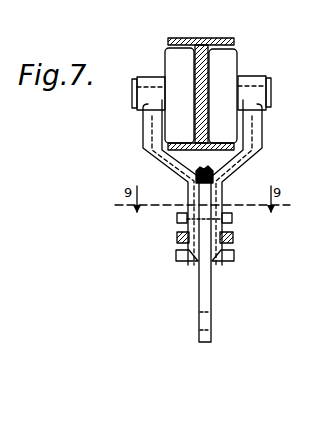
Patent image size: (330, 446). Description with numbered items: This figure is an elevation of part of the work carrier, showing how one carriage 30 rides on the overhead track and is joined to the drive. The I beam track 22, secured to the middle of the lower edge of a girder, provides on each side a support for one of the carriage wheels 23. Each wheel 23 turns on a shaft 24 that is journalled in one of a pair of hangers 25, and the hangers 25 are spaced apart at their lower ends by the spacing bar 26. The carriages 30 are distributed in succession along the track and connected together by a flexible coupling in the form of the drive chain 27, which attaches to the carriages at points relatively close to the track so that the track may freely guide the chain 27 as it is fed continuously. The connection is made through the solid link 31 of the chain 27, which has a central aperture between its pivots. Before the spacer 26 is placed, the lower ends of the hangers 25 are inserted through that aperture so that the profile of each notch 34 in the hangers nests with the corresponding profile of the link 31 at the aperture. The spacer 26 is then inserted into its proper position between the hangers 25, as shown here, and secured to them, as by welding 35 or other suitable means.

The I beam track 22 is at (188, 38).
The carriage wheel 23 is at (170, 63).
The shaft 24 is at (134, 98).
The hanger 25 is at (145, 138).
The spacing bar 26 is at (203, 290).
The drive chain 27 is at (174, 260).
The carriage 30 is at (138, 170).
The solid link 31 is at (177, 238).
The notch 34 is at (231, 248).
The welding 35 is at (206, 170).